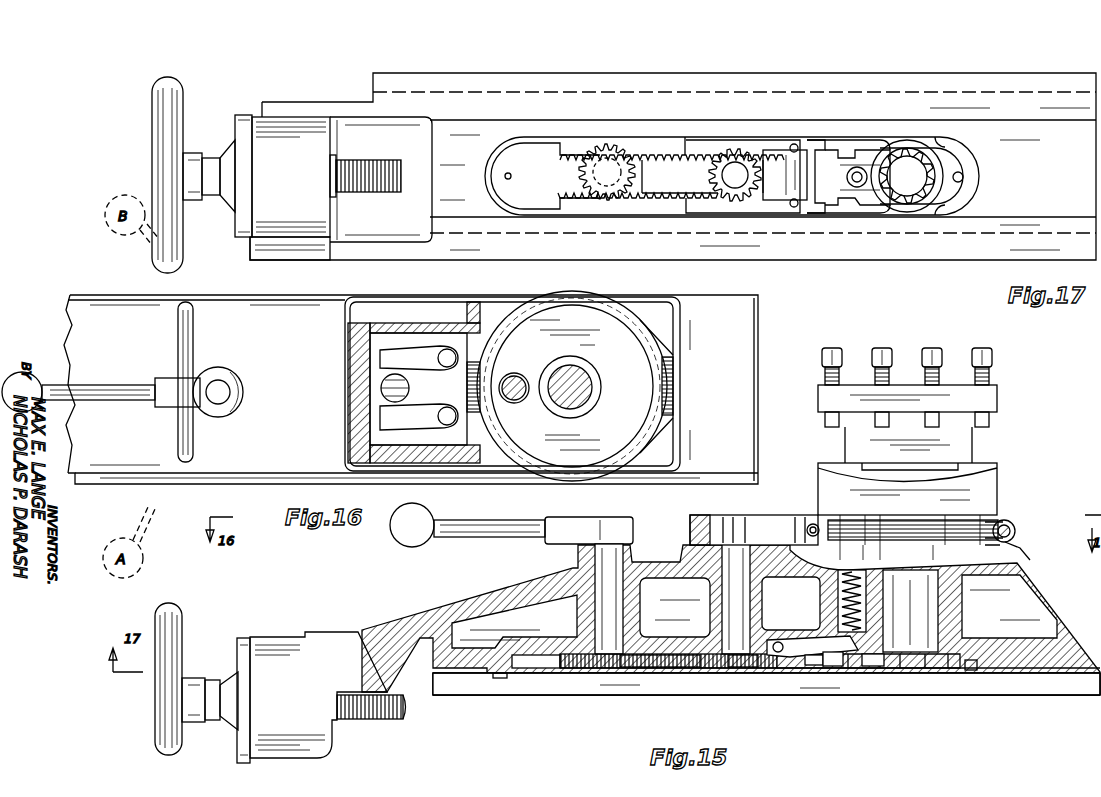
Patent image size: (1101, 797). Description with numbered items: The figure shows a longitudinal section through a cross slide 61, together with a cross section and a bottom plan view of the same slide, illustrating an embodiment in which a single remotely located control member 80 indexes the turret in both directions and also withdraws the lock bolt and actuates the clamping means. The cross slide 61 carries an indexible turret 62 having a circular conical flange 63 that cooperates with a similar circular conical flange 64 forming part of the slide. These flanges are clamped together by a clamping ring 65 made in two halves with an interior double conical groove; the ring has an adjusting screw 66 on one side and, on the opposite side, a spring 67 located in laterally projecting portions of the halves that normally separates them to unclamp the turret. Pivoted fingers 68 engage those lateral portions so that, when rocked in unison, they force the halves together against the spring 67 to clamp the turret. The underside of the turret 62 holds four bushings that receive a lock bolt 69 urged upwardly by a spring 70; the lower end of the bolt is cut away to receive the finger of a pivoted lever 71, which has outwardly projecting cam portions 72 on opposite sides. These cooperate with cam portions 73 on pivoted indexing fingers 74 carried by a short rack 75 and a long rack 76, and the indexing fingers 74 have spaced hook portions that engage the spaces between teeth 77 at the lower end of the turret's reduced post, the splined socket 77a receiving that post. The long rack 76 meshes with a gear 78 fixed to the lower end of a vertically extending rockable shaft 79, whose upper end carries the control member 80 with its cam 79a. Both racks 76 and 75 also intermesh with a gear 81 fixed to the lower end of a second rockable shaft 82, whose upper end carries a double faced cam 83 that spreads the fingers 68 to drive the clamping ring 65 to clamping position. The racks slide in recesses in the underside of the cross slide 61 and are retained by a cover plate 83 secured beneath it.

In FIG. 17, the cross slide 61 is at (955, 248).
In FIG. 16, the cross slide 61 is at (138, 468).
In FIG. 15, the cross slide 61 is at (482, 602).
In FIG. 17, the indexible turret 62 is at (918, 185).
In FIG. 16, the indexible turret 62 is at (588, 388).
In FIG. 15, the indexible turret 62 is at (980, 440).
In FIG. 15, the circular conical flange 63 is at (1000, 518).
In FIG. 15, the circular conical flange 64 is at (1015, 545).
In FIG. 16, the clamping ring 65 is at (640, 450).
In FIG. 15, the clamping ring 65 is at (1010, 524).
In FIG. 16, the adjusting screw 66 is at (674, 385).
In FIG. 15, the adjusting screw 66 is at (1016, 530).
In FIG. 16, the spring 67 is at (467, 385).
In FIG. 15, the spring 67 is at (812, 523).
In FIG. 16, the pivoted fingers 68 is at (382, 356).
In FIG. 15, the pivoted fingers 68 is at (772, 525).
In FIG. 17, the lock bolt 69 is at (870, 170).
In FIG. 16, the lock bolt 69 is at (516, 374).
In FIG. 15, the lock bolt 69 is at (840, 590).
In FIG. 15, the spring 70 is at (840, 609).
In FIG. 17, the pivoted lever 71 is at (785, 186).
In FIG. 15, the pivoted lever 71 is at (782, 660).
In FIG. 17, the cam portions 72 is at (835, 150).
In FIG. 15, the cam portions 72 is at (832, 668).
In FIG. 17, the cam portions 73 is at (820, 140).
In FIG. 15, the cam portions 73 is at (812, 668).
In FIG. 17, the pivoted indexing fingers 74 is at (858, 148).
In FIG. 15, the pivoted indexing fingers 74 is at (872, 668).
In FIG. 17, the short rack 75 is at (745, 148).
In FIG. 17, the long rack 76 is at (650, 200).
In FIG. 15, the long rack 76 is at (672, 672).
In FIG. 17, the teeth 77 is at (958, 162).
In FIG. 15, the teeth 77 is at (940, 672).
In FIG. 17, the splined socket 77a is at (912, 156).
In FIG. 17, the gear 78 is at (582, 175).
In FIG. 15, the gear 78 is at (605, 672).
In FIG. 16, the rockable shaft 79 is at (225, 388).
In FIG. 15, the rockable shaft 79 is at (597, 610).
In FIG. 16, the cam 79a is at (382, 388).
In FIG. 16, the control member 80 is at (98, 392).
In FIG. 15, the control member 80 is at (488, 522).
In FIG. 17, the gear 81 is at (711, 178).
In FIG. 15, the gear 81 is at (745, 672).
In FIG. 15, the rockable shaft 82 is at (735, 603).
In FIG. 15, the double faced cam 83 is at (535, 675).